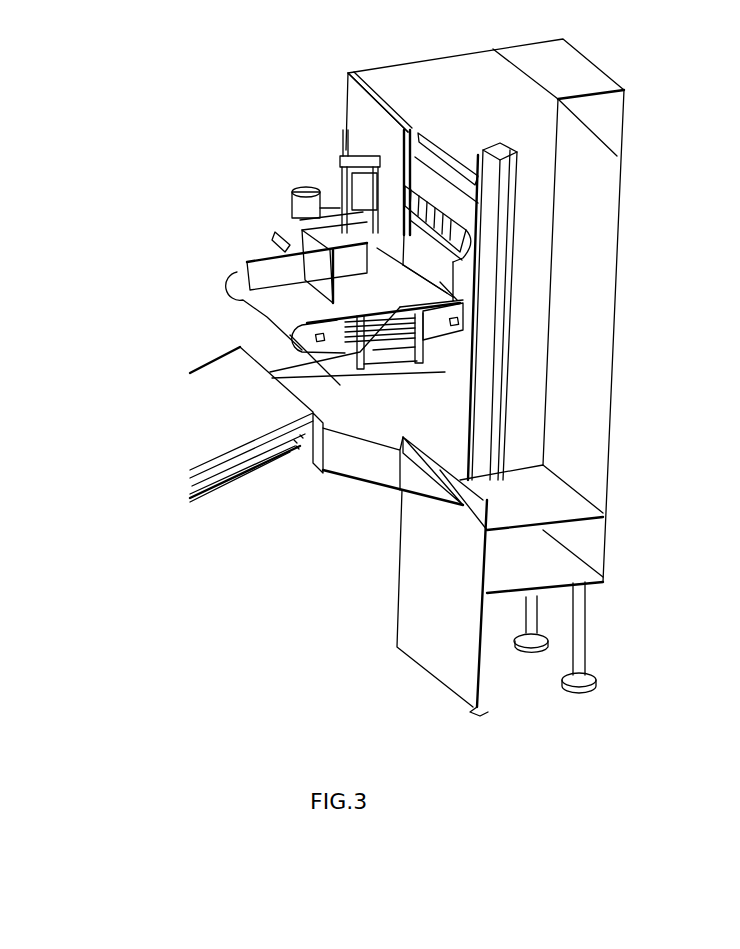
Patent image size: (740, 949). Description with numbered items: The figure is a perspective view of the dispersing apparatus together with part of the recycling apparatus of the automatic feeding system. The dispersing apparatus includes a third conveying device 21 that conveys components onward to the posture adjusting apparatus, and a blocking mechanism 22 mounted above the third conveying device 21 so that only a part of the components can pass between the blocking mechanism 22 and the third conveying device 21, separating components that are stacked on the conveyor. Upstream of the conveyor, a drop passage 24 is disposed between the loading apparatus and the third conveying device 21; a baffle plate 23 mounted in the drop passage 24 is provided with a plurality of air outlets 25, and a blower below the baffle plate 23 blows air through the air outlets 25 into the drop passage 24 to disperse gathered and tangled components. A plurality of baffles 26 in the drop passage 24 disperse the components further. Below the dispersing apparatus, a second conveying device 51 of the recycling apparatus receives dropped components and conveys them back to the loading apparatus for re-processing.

The third conveying device 21 is at (283, 317).
The blocking mechanism 22 is at (275, 235).
The baffle plate 23 is at (465, 248).
The drop passage 24 is at (415, 165).
The air outlets 25 is at (438, 208).
The baffles 26 is at (447, 178).
The second conveying device 51 is at (228, 431).